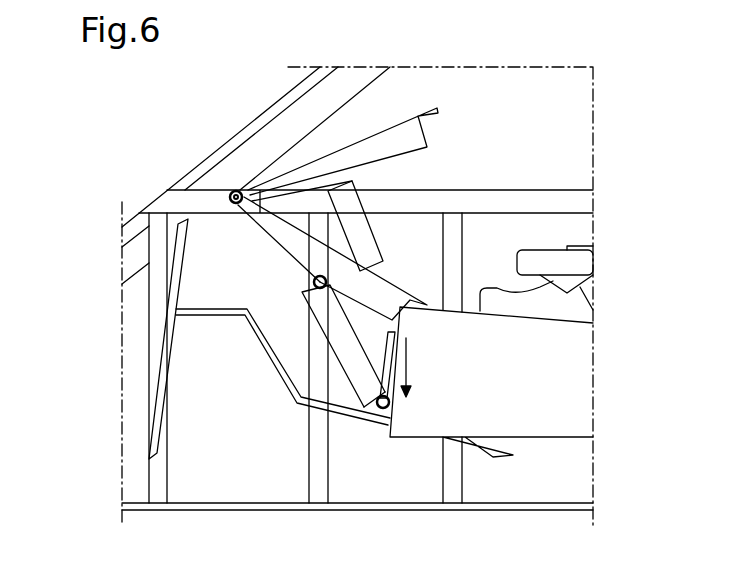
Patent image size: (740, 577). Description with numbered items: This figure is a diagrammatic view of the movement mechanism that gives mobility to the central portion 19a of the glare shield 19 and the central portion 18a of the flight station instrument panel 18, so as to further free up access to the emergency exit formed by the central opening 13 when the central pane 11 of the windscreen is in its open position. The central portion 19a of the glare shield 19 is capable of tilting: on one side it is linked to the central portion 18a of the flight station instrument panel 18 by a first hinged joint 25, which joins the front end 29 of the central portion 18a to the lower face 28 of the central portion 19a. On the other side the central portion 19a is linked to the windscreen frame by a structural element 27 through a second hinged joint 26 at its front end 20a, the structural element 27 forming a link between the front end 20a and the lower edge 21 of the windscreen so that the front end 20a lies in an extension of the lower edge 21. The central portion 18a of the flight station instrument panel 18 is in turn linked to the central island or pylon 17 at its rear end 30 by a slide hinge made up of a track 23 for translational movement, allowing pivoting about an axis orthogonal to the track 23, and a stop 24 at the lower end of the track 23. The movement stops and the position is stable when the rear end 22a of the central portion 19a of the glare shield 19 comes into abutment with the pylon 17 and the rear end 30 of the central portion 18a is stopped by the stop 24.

The central pane 11 is at (164, 378).
The central opening 13 is at (255, 108).
The central island 17 is at (520, 396).
The flight station instrument panel 18 is at (367, 208).
The central portion of the flight station instrument panel 18a is at (325, 330).
The glare shield 19 is at (452, 119).
The central portion of the glare shield 19a is at (386, 295).
The front end of the central portion of the glare shield 20a is at (246, 190).
The lower edge of the windscreen 21 is at (156, 198).
The rear end of the central portion of the glare shield 22a is at (434, 310).
The track 23 is at (413, 360).
The stop 24 is at (386, 408).
The first hinged joint 25 is at (258, 332).
The second hinged joint 26 is at (236, 204).
The structural element 27 is at (207, 200).
The lower face of the central portion of the glare shield 28 is at (288, 252).
The front end of the central portion of the flight station instrument panel 29 is at (314, 284).
The rear end of the central portion of the flight station instrument panel 30 is at (364, 386).